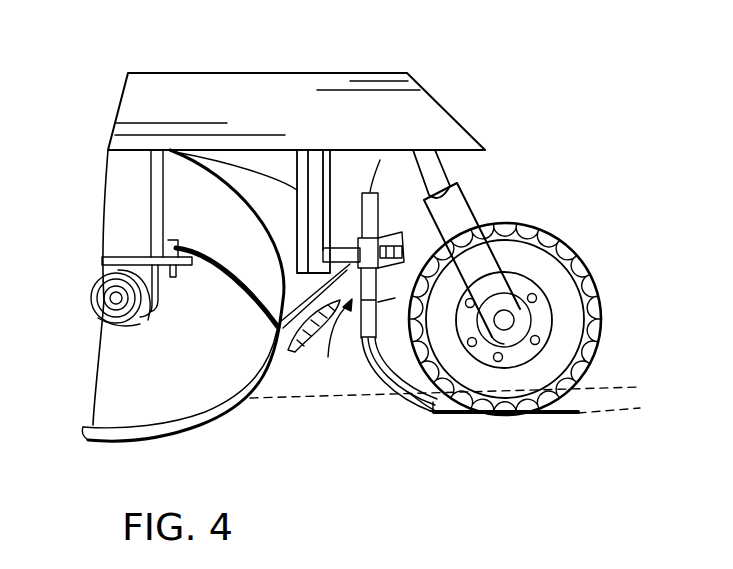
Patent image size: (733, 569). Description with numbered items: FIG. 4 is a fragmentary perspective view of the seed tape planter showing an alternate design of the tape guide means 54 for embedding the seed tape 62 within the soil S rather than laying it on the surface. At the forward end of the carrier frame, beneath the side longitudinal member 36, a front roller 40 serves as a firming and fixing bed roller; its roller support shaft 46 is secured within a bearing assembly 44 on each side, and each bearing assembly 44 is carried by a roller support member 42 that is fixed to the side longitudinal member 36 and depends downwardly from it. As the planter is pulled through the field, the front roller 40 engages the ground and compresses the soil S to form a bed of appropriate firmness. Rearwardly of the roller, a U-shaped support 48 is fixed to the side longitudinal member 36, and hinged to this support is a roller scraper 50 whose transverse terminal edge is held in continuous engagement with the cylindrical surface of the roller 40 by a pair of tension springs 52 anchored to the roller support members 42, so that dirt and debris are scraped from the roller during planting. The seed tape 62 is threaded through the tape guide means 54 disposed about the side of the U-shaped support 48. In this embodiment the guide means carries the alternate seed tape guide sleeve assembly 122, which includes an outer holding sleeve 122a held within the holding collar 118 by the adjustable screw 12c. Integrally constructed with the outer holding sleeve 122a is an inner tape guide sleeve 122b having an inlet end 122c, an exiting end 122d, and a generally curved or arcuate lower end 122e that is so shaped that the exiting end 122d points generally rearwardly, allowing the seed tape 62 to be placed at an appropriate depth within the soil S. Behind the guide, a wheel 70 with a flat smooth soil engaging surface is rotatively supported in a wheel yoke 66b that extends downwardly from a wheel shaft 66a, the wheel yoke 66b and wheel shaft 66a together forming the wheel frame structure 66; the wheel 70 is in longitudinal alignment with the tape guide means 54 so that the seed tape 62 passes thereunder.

The side longitudinal member 36 is at (273, 92).
The roller support member 42 is at (127, 183).
The U-shaped support 48 is at (318, 157).
The front roller 40 is at (205, 382).
The roller support shaft 46 is at (112, 298).
The bearing assembly 44 is at (118, 330).
The roller scraper 50 is at (296, 356).
The tension spring 52 is at (240, 325).
The holding collar 118 is at (378, 209).
The adjustable screw 12c is at (392, 246).
The tape guide means 54 is at (352, 350).
The seed tape guide sleeve assembly 122 is at (332, 341).
The outer holding sleeve 122a is at (378, 302).
The inner tape guide sleeve 122b is at (403, 410).
The inlet end 122c is at (370, 192).
The exiting end 122d is at (436, 414).
The curved lower end 122e is at (416, 414).
The wheel frame structure 66 is at (525, 219).
The wheel shaft 66a is at (448, 173).
The wheel yoke 66b is at (466, 179).
The seed tape 62 is at (545, 416).
The wheel 70 is at (578, 414).
The soil S is at (575, 412).